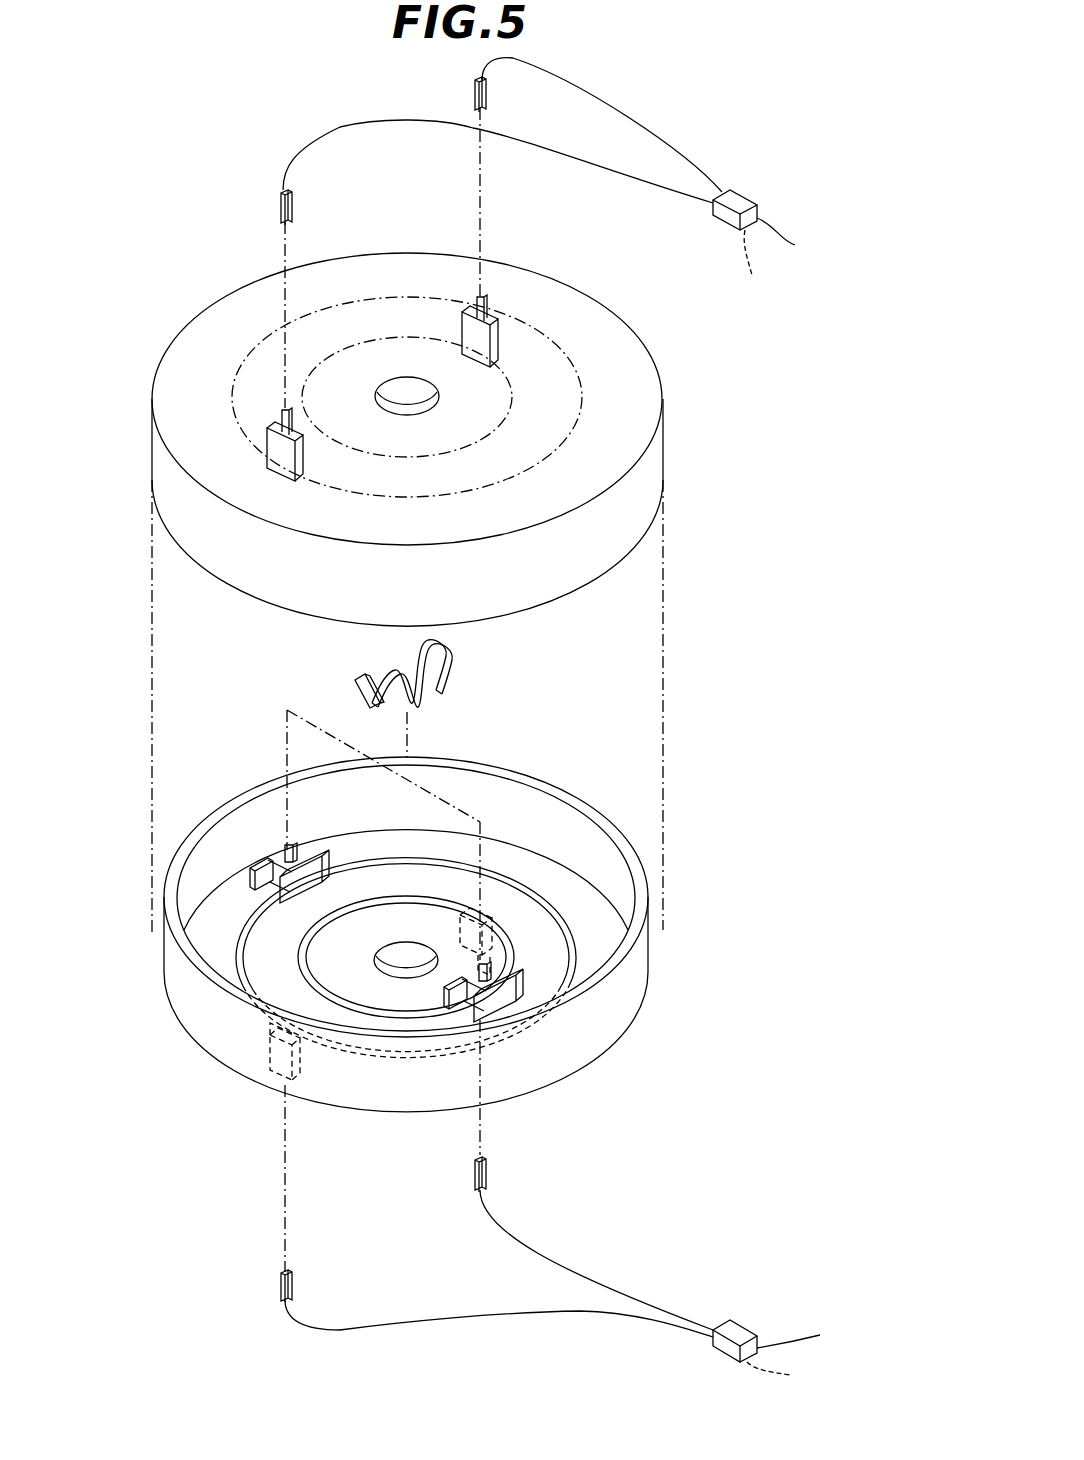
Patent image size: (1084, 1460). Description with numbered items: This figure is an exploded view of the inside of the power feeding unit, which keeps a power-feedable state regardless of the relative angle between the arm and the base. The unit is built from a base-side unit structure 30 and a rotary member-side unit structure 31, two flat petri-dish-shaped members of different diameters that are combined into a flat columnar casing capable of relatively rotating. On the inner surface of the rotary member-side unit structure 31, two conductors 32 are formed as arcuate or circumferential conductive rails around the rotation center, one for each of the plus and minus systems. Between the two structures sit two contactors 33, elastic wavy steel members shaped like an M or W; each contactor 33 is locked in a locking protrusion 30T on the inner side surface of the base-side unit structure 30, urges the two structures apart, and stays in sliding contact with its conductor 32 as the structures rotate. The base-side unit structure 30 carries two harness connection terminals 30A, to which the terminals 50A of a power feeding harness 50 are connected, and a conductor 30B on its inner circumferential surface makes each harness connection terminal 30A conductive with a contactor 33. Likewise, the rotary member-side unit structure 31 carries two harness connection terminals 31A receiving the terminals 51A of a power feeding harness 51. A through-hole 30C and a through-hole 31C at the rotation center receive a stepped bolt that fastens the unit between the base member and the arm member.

The base-side unit structure 30 is at (588, 800).
The harness connection terminal 30A is at (500, 935).
The conductor 30B is at (513, 878).
The through-hole 30C is at (395, 956).
The locking protrusion 30T is at (265, 855).
The rotary member-side unit structure 31 is at (622, 360).
The harness connection terminal 31A is at (498, 352).
The through-hole 31C is at (405, 380).
The conductor 32 is at (513, 383).
The contactor 33 is at (393, 680).
The power feeding harness 50 is at (747, 1318).
The terminal 50A is at (487, 1172).
The power feeding harness 51 is at (756, 185).
The terminal 51A is at (475, 92).